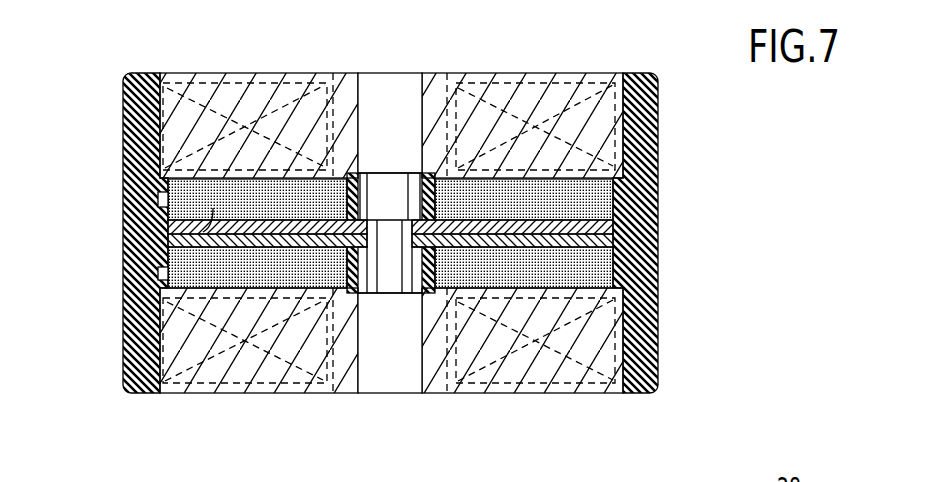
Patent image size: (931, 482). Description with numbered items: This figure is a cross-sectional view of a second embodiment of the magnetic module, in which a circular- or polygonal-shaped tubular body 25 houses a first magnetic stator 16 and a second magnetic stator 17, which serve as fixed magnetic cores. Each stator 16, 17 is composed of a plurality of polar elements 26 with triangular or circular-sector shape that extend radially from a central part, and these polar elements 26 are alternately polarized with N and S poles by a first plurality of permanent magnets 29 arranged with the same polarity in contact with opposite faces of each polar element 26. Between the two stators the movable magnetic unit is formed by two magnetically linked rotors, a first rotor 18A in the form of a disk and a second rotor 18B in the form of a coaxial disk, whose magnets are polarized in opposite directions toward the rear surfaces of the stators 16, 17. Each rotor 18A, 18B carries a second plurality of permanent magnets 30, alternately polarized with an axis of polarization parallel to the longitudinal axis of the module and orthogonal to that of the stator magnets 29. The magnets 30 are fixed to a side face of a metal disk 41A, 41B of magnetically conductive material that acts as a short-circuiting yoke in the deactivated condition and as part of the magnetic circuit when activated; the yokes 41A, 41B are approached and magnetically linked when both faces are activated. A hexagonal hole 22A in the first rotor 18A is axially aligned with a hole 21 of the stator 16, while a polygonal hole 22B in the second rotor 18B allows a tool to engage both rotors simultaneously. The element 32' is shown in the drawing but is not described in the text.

The first magnetic stator 16 is at (702, 141).
The second magnetic stator 17 is at (702, 355).
The first rotor 18A is at (708, 212).
The second rotor 18B is at (708, 277).
The hole of the stator 21 is at (403, 140).
The hexagonal hole 22A is at (408, 202).
The polygonal hole 22B is at (397, 270).
The tubular body 25 is at (125, 380).
The polar elements 26 is at (346, 105).
The permanent magnets 29 is at (162, 112).
The permanent magnets 30 is at (237, 278).
The gap 32' is at (209, 326).
The metal disk 41A is at (590, 228).
The metal disk 41B is at (584, 238).